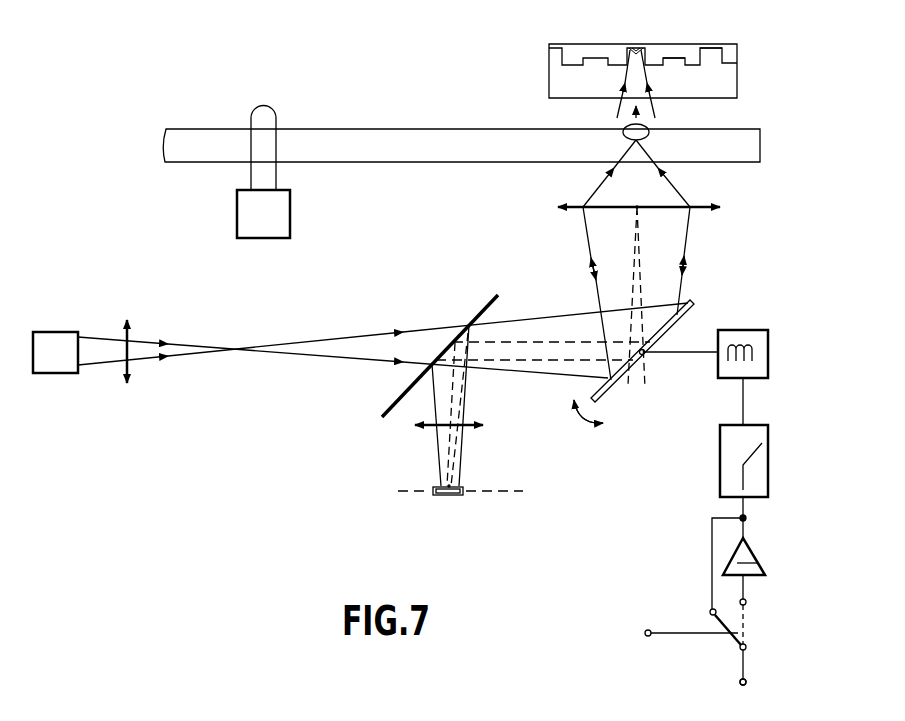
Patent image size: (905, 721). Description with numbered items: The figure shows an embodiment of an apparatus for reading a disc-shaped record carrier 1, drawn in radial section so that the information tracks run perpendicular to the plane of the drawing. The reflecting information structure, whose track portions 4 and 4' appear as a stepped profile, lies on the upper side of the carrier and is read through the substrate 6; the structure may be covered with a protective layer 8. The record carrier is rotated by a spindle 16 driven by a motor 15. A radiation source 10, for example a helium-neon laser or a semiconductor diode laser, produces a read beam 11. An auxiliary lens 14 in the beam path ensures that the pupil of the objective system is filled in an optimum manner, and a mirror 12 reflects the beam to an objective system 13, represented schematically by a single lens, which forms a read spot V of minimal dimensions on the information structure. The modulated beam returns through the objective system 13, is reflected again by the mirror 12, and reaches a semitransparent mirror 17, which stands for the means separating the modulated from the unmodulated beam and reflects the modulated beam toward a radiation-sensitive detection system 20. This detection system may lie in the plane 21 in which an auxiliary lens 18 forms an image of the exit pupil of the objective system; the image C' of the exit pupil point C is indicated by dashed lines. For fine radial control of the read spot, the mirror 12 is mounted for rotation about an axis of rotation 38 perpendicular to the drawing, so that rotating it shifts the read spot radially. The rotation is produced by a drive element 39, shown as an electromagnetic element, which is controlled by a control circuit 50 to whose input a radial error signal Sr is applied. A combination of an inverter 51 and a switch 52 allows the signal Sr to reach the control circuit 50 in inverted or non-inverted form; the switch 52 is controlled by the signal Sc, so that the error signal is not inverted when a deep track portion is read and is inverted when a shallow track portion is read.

The rod / workpiece 1 is at (440, 127).
The tooth 4 is at (711, 87).
The tooth gap 4' is at (674, 92).
The substrate 6 is at (727, 90).
The protective layer 8 is at (728, 54).
The read spot V is at (632, 47).
The radiation source 10 is at (57, 376).
The read beam 11 is at (169, 341).
The mirror 12 is at (691, 303).
The objective system 13 is at (663, 208).
The auxiliary lens 14 is at (129, 354).
The motor 15 is at (281, 219).
The spindle 16 is at (266, 122).
The semitransparent mirror 17 is at (483, 312).
The auxiliary lens 18 is at (470, 425).
The radiation-sensitive detection system 20 is at (452, 496).
The plane 21 is at (523, 491).
The axis of rotation 38 is at (648, 383).
The drive element 39 is at (716, 364).
The control circuit 50 is at (724, 446).
The inverter 51 is at (733, 560).
The switch 52 is at (735, 640).
The point of the exit pupil C is at (685, 241).
The image of point C C' is at (474, 474).
The control signal Sc is at (649, 637).
The radial error signal Sr is at (743, 686).